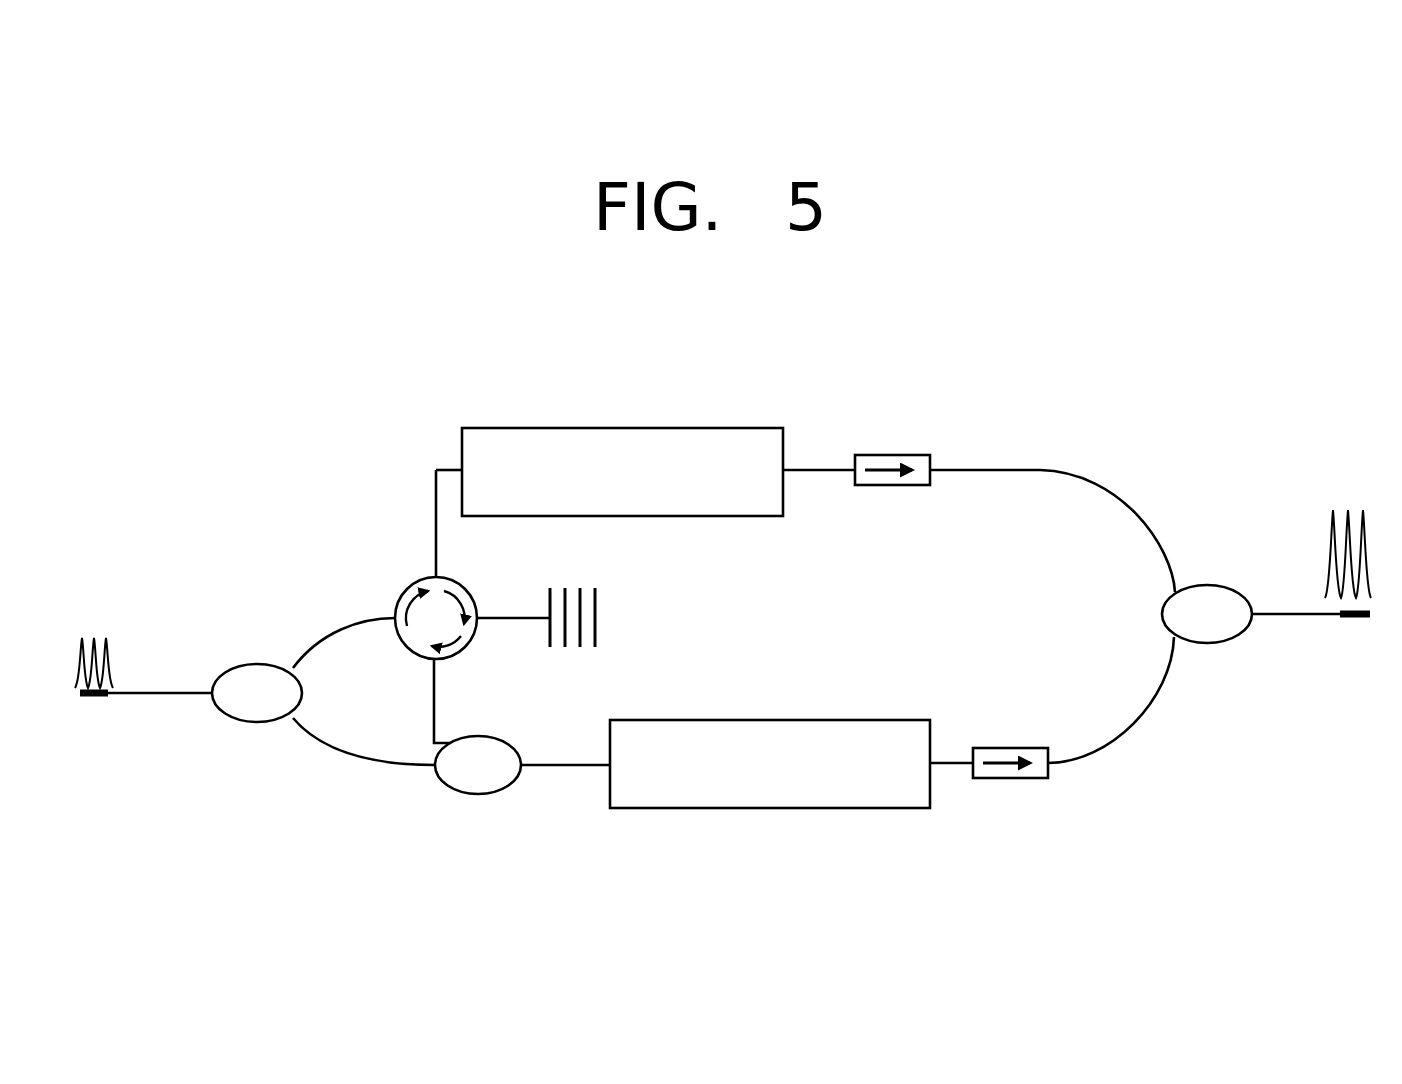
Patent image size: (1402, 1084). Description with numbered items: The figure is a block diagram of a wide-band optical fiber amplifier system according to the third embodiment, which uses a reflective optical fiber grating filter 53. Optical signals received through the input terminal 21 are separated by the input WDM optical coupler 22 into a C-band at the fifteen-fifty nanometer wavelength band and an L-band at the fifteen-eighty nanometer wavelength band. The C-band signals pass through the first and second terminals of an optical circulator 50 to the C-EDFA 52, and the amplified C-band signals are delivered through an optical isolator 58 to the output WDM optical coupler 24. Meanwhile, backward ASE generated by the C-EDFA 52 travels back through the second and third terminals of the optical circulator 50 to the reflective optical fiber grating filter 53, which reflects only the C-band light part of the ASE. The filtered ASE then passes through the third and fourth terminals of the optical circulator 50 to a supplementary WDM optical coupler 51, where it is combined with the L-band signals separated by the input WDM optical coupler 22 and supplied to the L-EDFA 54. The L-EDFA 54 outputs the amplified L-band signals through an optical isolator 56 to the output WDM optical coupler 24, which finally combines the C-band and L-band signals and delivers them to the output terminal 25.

The input terminal 21 is at (96, 703).
The input WDM optical coupler 22 is at (232, 666).
The output WDM optical coupler 24 is at (1218, 586).
The output terminal 25 is at (1356, 620).
The optical circulator 50 is at (408, 584).
The supplementary WDM optical coupler 51 is at (462, 795).
The C-EDFA 52 is at (621, 428).
The reflective optical fiber grating filter 53 is at (558, 617).
The L-EDFA 54 is at (768, 720).
The optical isolator 56 is at (1000, 748).
The optical isolator 58 is at (883, 455).